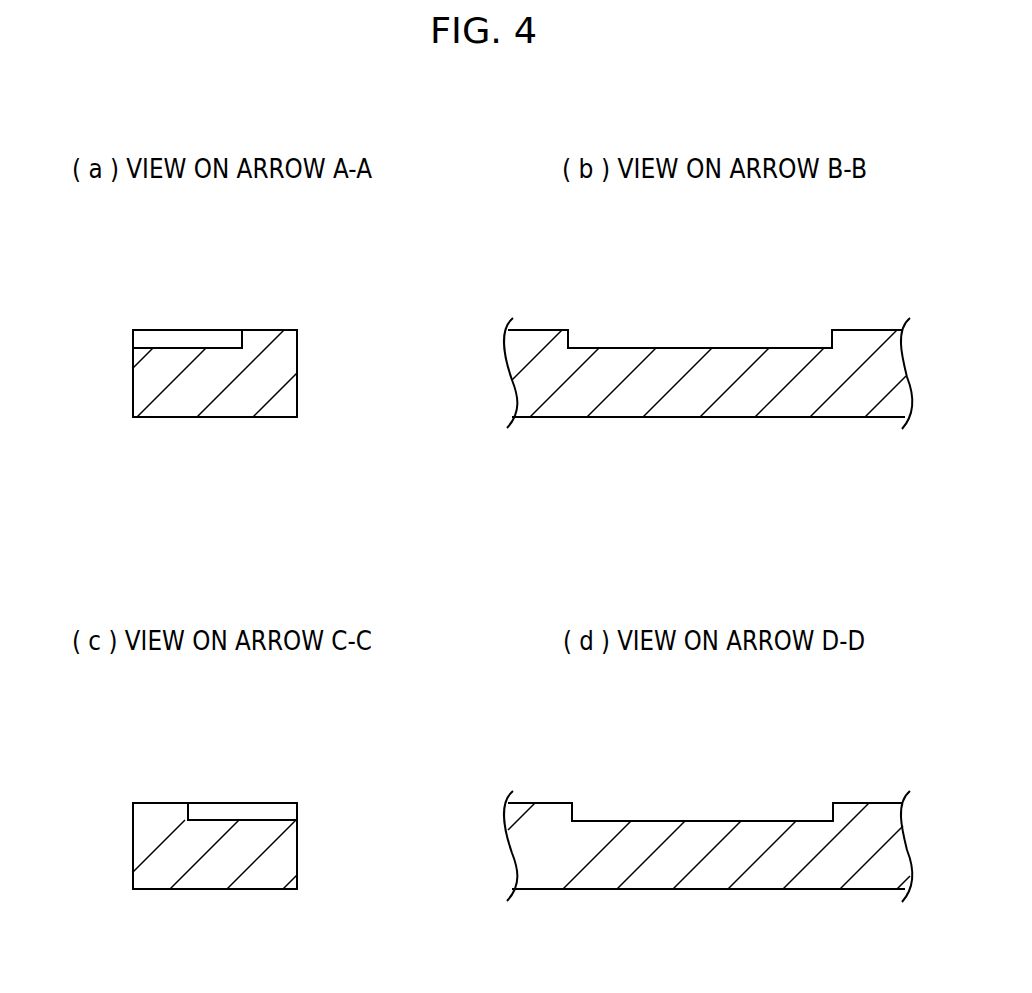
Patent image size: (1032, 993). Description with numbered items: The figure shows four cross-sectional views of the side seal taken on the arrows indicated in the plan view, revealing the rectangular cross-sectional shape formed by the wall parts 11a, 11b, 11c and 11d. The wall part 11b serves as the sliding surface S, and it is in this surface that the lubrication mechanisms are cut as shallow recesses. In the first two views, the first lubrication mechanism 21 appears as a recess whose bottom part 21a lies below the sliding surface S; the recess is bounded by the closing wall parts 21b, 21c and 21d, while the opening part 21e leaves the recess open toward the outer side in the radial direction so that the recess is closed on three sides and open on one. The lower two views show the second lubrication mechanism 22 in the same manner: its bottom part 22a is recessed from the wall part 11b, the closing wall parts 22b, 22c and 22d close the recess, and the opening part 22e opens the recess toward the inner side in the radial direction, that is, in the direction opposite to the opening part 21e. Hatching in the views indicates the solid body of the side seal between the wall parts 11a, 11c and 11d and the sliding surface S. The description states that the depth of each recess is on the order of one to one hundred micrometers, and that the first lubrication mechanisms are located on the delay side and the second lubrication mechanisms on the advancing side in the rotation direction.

The wall part 11a is at (133, 370).
The wall part 11b is at (257, 330).
The wall part 11c is at (297, 370).
The wall part 11d is at (198, 418).
The first lubrication mechanism 21 is at (148, 312).
The bottom part 21a is at (210, 348).
The closing wall part 21b is at (830, 330).
The closing wall part 21c is at (241, 347).
The closing wall part 21d is at (580, 329).
The opening part 21e is at (133, 342).
The second lubrication mechanism 22 is at (280, 775).
The bottom part 22a is at (220, 818).
The closing wall part 22b is at (578, 803).
The closing wall part 22c is at (200, 818).
The closing wall part 22d is at (830, 803).
The opening part 22e is at (297, 813).
The sliding surface S is at (289, 326).